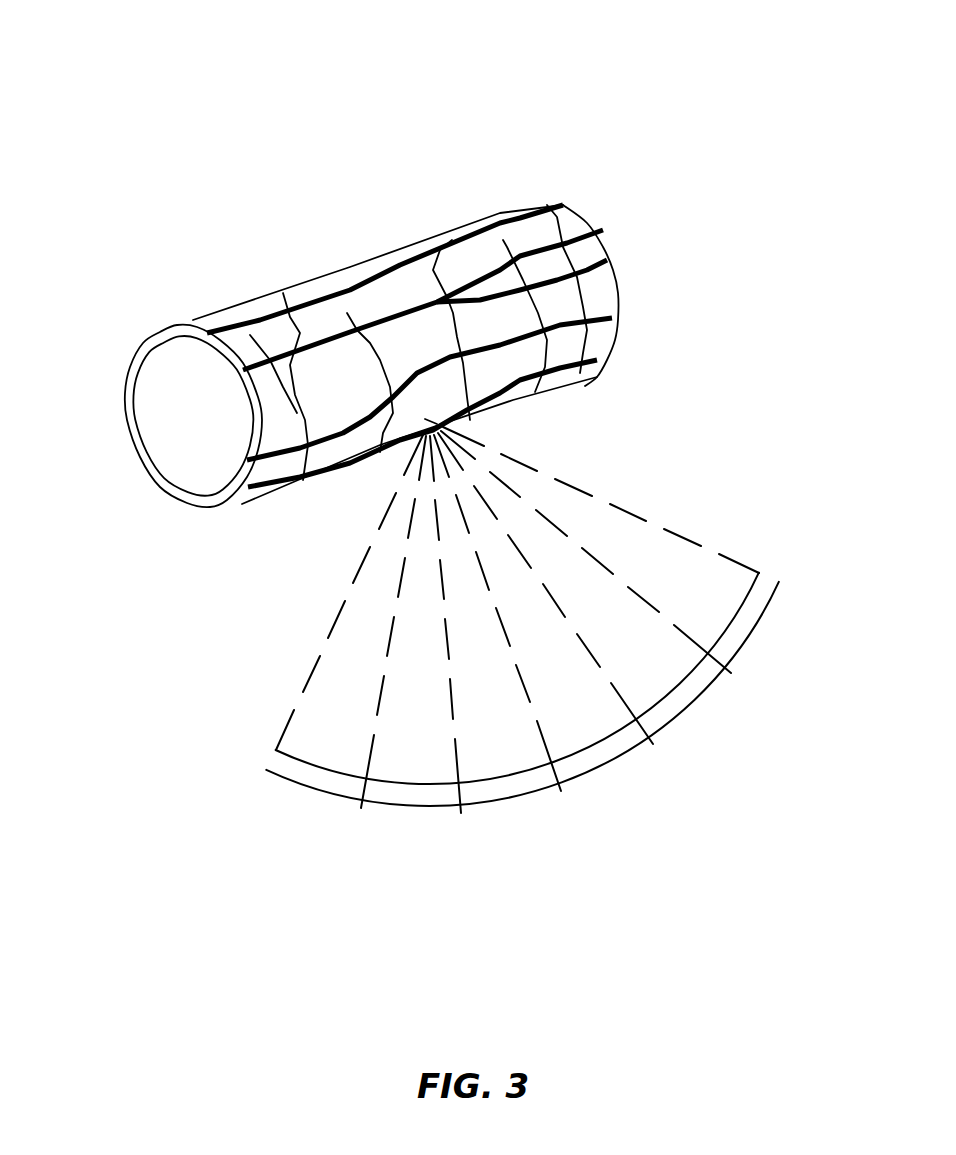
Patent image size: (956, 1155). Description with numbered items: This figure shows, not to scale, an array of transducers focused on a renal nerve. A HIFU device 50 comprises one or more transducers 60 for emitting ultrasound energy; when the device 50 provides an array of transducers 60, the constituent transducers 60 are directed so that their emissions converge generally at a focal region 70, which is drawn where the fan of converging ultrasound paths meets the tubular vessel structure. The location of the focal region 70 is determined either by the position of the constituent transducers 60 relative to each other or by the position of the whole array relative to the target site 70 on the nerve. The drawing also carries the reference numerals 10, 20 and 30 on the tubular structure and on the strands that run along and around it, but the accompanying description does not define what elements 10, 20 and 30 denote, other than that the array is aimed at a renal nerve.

The mesh tube assembly 10 is at (385, 220).
The first strands of mesh 20 is at (347, 313).
The second strands of mesh 30 is at (452, 240).
The HIFU device 50 is at (228, 687).
The transducers 60 is at (603, 753).
The focal region 70 is at (437, 424).